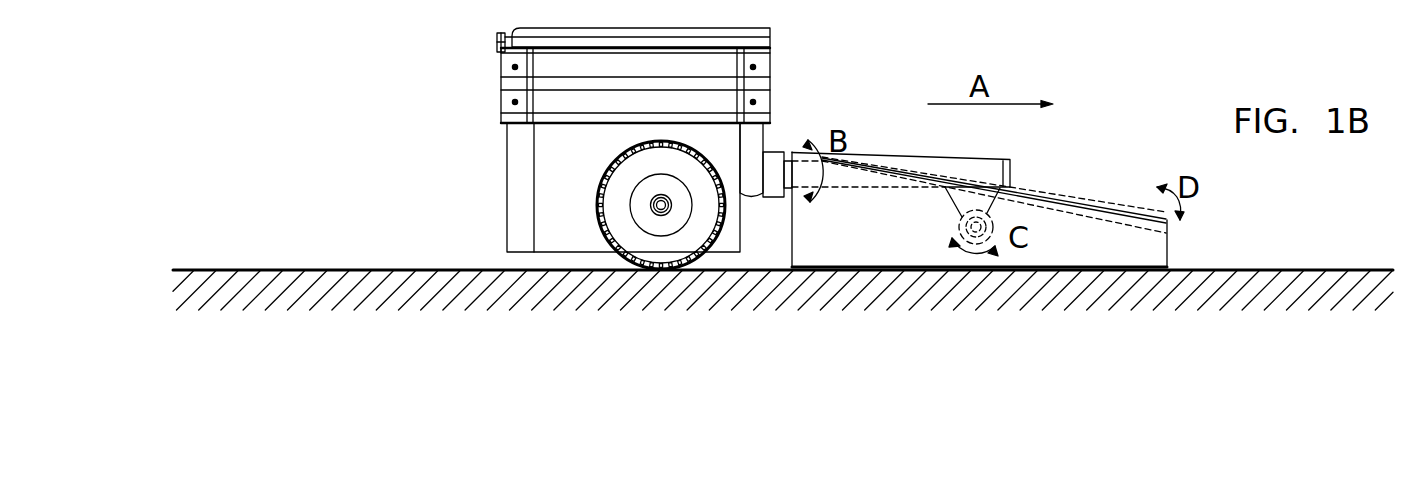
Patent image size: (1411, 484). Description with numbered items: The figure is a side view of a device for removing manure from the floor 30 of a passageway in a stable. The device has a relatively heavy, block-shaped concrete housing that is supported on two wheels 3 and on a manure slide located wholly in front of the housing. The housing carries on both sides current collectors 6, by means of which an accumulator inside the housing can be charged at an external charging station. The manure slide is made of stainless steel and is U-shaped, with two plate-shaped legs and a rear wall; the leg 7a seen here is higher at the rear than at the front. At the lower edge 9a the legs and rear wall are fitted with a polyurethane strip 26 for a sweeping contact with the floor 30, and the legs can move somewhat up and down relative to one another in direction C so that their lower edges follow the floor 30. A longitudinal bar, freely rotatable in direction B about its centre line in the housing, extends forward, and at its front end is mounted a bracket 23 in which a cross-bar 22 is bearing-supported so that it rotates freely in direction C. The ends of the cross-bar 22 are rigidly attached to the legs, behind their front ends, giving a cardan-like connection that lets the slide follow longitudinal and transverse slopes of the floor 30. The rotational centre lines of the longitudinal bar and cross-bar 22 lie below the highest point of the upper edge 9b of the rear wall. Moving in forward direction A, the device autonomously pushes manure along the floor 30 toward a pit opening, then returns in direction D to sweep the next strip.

The wheels 3 is at (617, 204).
The current collectors 6 is at (548, 68).
The leg 7a is at (1072, 242).
The lower edge 9a is at (1023, 267).
The upper edge 9b is at (1022, 199).
The cross-bar 22 is at (976, 227).
The bracket 23 is at (972, 198).
The polyurethane strip 26 is at (792, 268).
The floor 30 is at (1267, 271).